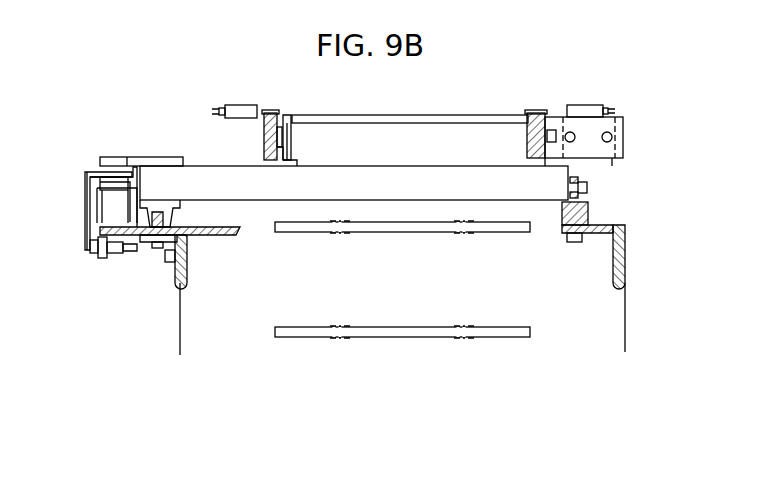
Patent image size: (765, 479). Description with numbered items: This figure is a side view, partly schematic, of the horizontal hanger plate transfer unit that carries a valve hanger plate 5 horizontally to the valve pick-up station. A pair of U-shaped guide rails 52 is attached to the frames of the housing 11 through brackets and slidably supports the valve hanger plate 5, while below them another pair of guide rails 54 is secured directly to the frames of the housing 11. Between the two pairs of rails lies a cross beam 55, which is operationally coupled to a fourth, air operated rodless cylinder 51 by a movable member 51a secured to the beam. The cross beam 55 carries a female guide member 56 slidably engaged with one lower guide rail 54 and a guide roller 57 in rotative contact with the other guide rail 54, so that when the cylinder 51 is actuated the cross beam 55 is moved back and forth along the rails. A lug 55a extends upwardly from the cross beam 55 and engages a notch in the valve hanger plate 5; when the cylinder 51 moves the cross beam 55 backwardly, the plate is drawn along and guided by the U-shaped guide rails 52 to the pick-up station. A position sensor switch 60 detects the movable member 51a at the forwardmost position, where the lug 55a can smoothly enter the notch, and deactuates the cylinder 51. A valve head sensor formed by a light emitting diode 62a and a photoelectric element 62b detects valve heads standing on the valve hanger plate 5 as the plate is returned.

The valve hanger plate 5 is at (453, 120).
The housing 11 is at (613, 268).
The fourth air operated rodless cylinder 51 is at (92, 215).
The movable member 51a is at (86, 240).
The U-shaped guide rails 52 is at (263, 140).
The guide rails 54 is at (589, 211).
The cross beam 55 is at (268, 201).
The lug 55a is at (287, 116).
The female guide member 56 is at (178, 205).
The guide roller 57 is at (578, 176).
The position sensor switch 60 is at (115, 256).
The light emitting diode 62a is at (592, 105).
The photoelectric element 62b is at (240, 105).